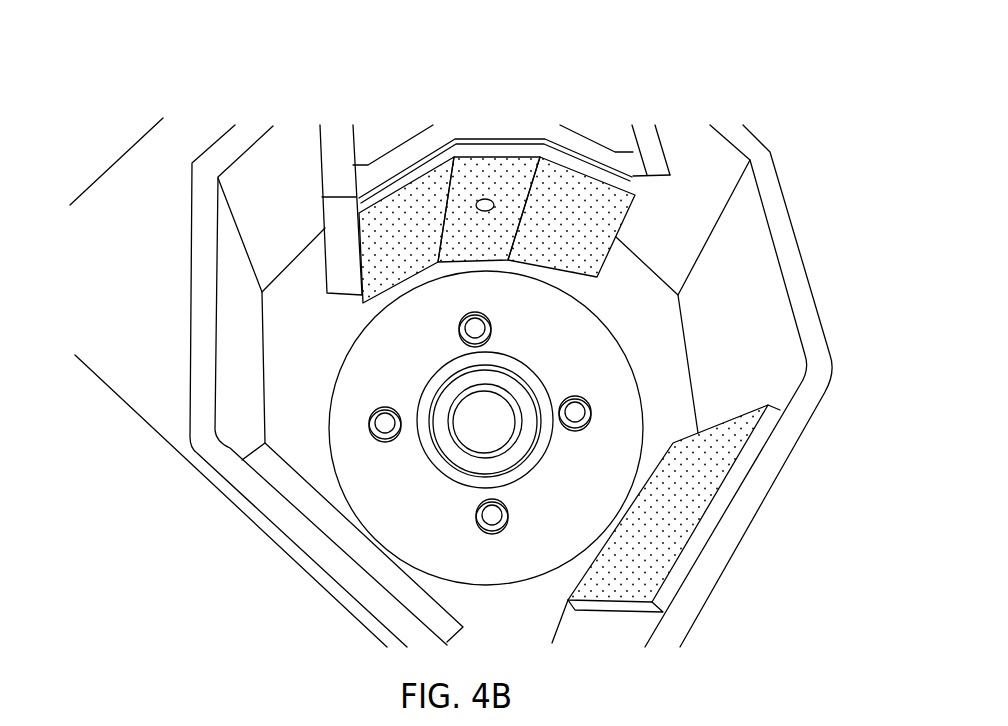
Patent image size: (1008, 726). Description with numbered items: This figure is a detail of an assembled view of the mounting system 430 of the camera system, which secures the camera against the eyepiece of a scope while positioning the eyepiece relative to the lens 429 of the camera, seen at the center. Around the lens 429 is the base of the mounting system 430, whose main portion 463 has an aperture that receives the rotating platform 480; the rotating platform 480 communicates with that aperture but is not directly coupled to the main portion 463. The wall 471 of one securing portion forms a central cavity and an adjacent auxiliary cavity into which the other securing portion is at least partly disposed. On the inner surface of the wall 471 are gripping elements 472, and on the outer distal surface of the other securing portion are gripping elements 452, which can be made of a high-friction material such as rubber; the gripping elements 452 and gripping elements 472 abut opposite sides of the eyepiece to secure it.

The mounting system 430 is at (773, 82).
The lens 429 is at (487, 418).
The gripping elements 452 is at (480, 152).
The rotating platform 480 is at (317, 343).
The wall 471 is at (202, 313).
The main portion 463 is at (290, 380).
The gripping elements 472 is at (303, 498).